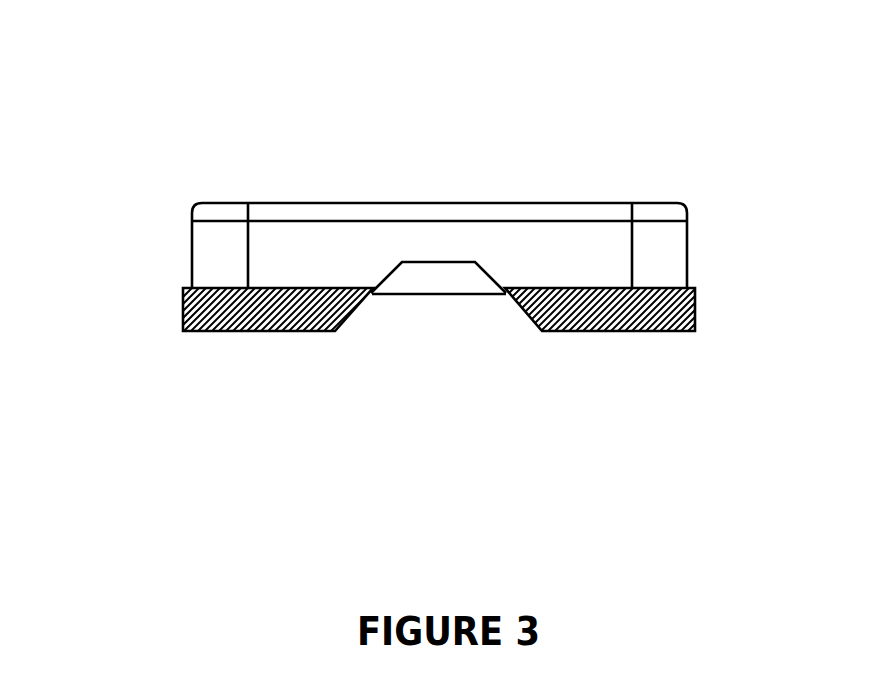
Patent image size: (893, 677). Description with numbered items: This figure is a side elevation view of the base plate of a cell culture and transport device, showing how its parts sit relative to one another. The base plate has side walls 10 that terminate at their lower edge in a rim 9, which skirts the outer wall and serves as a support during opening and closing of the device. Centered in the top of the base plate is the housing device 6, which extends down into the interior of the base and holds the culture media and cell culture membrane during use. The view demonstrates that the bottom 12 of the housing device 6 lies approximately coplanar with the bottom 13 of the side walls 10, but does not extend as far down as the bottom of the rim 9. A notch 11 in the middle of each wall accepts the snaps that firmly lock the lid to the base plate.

The housing device 6 is at (398, 268).
The rim 9 is at (185, 335).
The side walls 10 is at (473, 253).
The notch 11 is at (697, 290).
The bottom of the housing device 12 is at (427, 295).
The bottom of the side walls 13 is at (198, 275).